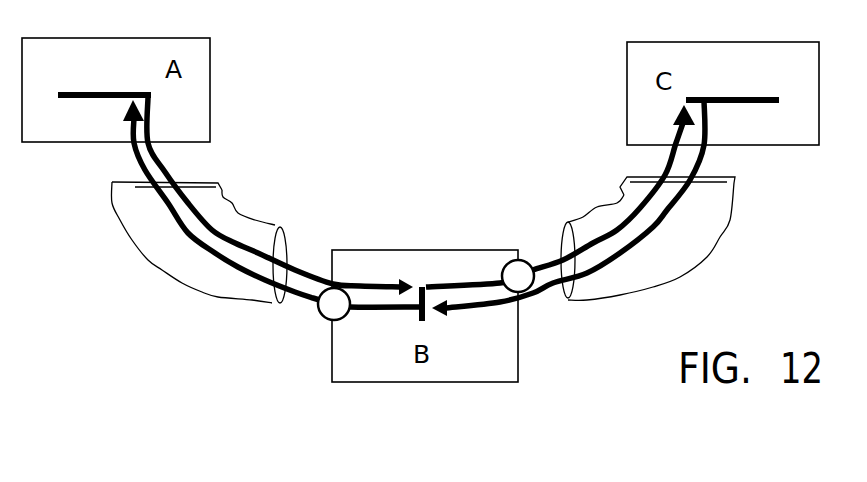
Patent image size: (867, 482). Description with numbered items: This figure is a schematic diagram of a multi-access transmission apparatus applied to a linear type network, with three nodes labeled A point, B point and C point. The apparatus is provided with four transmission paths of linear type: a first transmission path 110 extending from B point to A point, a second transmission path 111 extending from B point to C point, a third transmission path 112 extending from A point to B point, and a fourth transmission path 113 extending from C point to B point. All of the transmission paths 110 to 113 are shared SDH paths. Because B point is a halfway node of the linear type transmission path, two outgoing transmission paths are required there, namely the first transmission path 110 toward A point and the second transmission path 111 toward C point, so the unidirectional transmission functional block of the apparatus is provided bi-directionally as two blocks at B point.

The first transmission path 110 is at (232, 265).
The second transmission path 111 is at (620, 223).
The third transmission path 112 is at (216, 213).
The fourth transmission path 113 is at (543, 300).